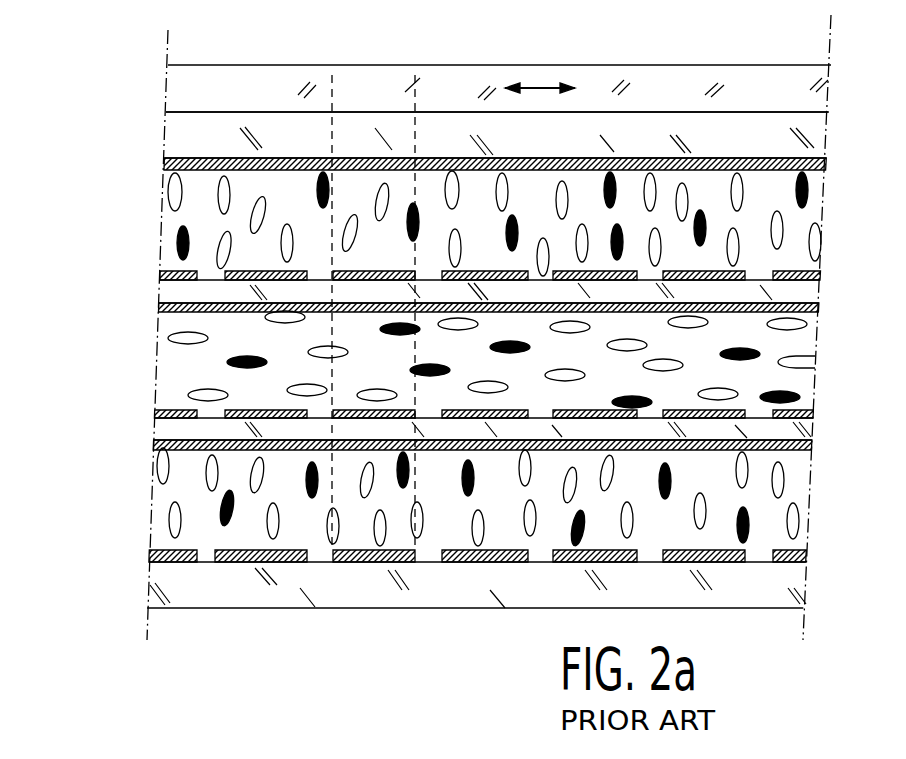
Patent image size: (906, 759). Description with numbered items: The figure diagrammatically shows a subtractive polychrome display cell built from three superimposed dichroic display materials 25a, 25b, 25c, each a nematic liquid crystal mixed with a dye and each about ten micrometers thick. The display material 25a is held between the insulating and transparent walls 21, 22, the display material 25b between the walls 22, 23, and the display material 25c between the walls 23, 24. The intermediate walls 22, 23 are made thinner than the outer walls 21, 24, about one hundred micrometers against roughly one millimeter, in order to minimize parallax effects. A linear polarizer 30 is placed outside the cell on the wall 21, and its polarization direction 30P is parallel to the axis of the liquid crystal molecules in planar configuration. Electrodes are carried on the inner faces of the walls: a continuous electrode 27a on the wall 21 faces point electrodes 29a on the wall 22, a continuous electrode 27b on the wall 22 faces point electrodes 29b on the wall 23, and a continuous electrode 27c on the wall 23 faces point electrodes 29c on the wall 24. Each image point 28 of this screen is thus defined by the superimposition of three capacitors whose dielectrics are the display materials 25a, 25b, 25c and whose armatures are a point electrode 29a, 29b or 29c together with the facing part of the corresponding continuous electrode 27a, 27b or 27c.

The linear polarizer 30 is at (190, 64).
The insulating and transparent wall 21 is at (183, 112).
The continuous electrode 27a is at (650, 165).
The dichroic display material 25a is at (773, 190).
The point electrodes 29a is at (162, 272).
The insulating and transparent wall 22 is at (157, 290).
The continuous electrode 27b is at (158, 304).
The dichroic display material 25b is at (170, 358).
The point electrodes 29b is at (157, 412).
The insulating and transparent wall 23 is at (157, 428).
The continuous electrode 27c is at (152, 451).
The dichroic display material 25c is at (148, 527).
The point electrodes 29c is at (210, 565).
The insulating and transparent wall 24 is at (150, 618).
The image point 28 is at (425, 57).
The polarization direction 30P is at (531, 87).